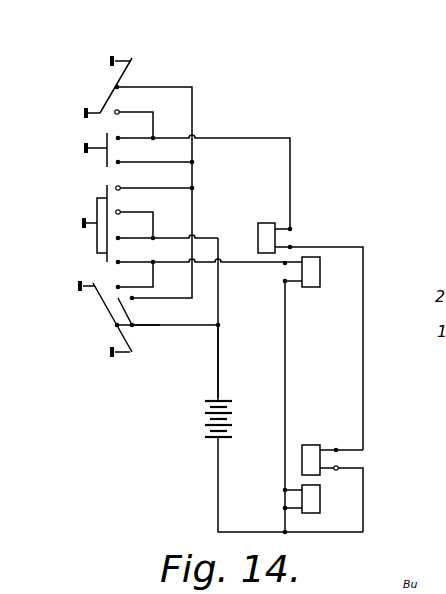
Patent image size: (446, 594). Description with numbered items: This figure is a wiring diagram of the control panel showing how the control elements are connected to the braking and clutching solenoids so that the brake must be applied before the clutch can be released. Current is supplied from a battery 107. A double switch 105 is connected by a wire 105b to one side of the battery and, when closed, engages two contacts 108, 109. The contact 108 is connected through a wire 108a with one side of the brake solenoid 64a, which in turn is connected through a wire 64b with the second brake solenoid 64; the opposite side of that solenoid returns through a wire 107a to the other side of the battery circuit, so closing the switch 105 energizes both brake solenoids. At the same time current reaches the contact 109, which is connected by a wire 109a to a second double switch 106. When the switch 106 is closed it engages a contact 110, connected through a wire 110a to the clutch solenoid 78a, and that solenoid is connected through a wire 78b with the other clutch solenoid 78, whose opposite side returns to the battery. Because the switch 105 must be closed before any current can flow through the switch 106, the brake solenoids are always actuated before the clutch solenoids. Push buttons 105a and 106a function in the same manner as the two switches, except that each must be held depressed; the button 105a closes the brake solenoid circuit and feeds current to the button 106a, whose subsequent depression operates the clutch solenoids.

The double switch 106 is at (117, 78).
The contact 110 is at (120, 110).
The wire 109a is at (194, 100).
The wire 110a is at (281, 123).
The push button 106a is at (105, 151).
The push button 105a is at (97, 215).
The contact 108 is at (117, 287).
The wire 108a is at (220, 265).
The double switch 105 is at (110, 321).
The contact 109 is at (137, 303).
The wire 105b is at (157, 330).
The battery 107 is at (205, 427).
The wire 107a is at (214, 491).
The clutch solenoid 78a is at (271, 223).
The wire 78b is at (365, 392).
The brake solenoid 64a is at (318, 288).
The wire 64b is at (287, 380).
The clutch solenoid 78 is at (325, 421).
The brake solenoid 64 is at (320, 498).